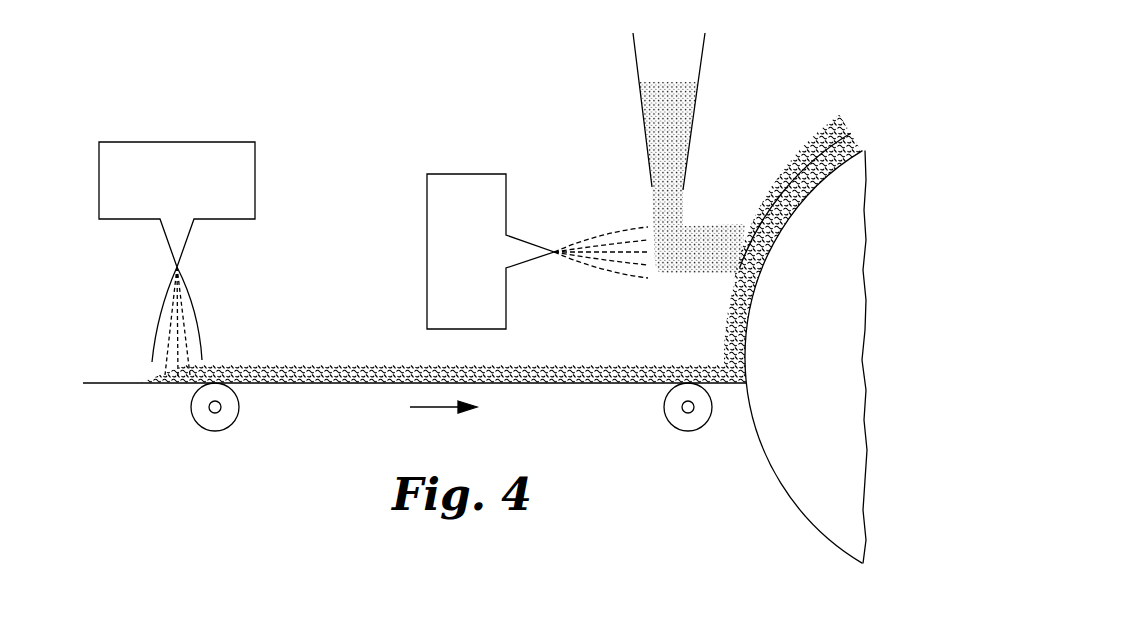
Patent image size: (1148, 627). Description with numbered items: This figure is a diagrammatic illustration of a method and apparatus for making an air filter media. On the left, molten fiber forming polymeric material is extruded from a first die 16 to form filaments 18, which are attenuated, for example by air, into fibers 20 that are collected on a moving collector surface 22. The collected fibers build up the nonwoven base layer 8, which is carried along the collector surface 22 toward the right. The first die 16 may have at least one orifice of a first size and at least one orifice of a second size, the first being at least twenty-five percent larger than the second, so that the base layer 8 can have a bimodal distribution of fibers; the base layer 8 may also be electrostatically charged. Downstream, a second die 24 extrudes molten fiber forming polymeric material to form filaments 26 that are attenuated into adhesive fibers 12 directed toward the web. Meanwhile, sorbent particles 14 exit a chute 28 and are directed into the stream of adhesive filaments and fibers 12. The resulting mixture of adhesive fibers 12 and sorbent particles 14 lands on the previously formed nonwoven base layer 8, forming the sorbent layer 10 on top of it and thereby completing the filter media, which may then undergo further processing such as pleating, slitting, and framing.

The base layer 8 is at (310, 370).
The sorbent layer 10 is at (808, 140).
The adhesive fibers 12 is at (623, 227).
The sorbent particles 14 is at (675, 210).
The first die 16 is at (170, 243).
The filaments 18 is at (192, 283).
The fibers 20 is at (198, 323).
The collector surface 22 is at (102, 382).
The second die 24 is at (450, 182).
The filaments 26 is at (568, 240).
The chute 28 is at (685, 183).